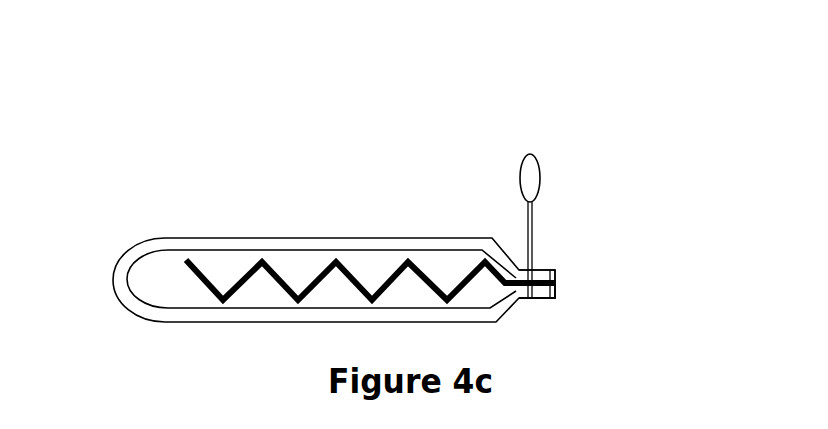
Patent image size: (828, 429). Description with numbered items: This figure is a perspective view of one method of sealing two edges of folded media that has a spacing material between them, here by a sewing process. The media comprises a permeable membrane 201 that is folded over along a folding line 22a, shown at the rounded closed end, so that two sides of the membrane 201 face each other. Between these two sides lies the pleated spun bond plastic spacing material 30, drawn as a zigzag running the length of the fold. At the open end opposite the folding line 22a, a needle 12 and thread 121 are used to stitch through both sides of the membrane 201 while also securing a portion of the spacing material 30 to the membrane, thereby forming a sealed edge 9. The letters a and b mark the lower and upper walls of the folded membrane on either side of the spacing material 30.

The folding line 22a is at (118, 277).
The permeable membrane 201 is at (227, 313).
The lower wall portion a is at (285, 314).
The upper wall portion b is at (307, 245).
The spacing material 30 is at (456, 283).
The needle 12 is at (534, 222).
The thread 121 is at (539, 271).
The sealed edge 9 is at (556, 292).